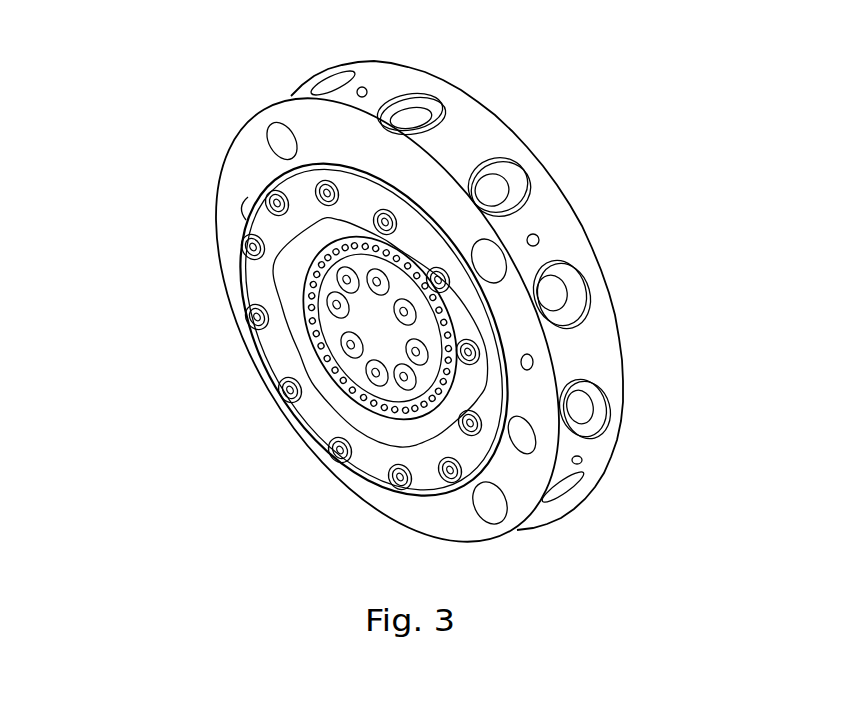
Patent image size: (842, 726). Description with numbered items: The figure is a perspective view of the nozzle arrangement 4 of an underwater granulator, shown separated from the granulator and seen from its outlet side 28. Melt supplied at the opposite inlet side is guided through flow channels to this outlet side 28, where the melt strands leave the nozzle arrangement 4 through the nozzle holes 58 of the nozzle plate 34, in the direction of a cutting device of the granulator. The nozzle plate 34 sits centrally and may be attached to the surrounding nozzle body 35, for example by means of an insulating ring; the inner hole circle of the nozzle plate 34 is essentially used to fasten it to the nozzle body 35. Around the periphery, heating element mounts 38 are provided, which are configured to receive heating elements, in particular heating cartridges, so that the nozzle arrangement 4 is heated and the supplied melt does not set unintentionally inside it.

The nozzle arrangement 4 is at (126, 109).
The outlet side 28 is at (236, 424).
The nozzle plate 34 is at (370, 320).
The nozzle body 35 is at (557, 218).
The heating element mount 38 is at (413, 118).
The nozzle hole 58 is at (308, 275).